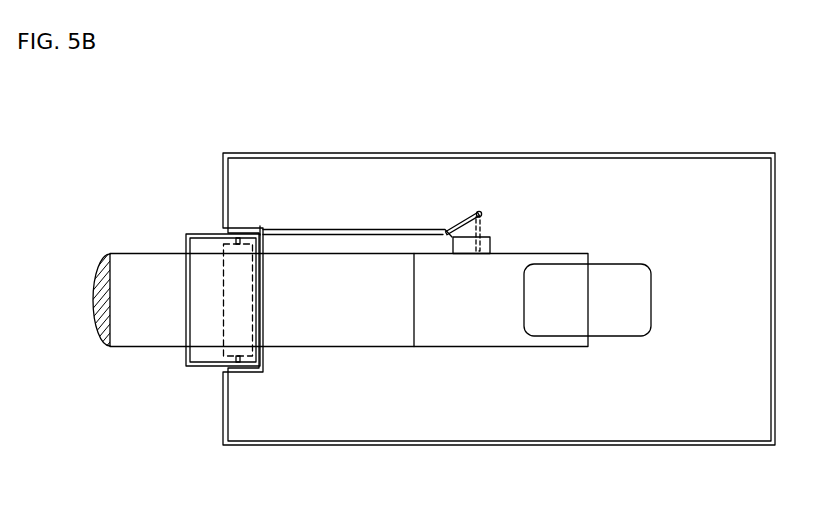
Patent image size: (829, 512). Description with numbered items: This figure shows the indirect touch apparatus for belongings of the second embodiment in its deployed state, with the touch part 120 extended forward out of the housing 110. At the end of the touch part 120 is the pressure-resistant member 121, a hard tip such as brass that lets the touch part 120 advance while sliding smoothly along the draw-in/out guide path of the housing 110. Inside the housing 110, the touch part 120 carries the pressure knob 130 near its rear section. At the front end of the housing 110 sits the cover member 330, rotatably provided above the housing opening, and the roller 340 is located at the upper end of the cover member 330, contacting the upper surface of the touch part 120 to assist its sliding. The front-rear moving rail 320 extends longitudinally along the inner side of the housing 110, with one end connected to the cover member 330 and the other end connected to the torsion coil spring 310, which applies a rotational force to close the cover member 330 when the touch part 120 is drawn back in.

The housing 110 is at (760, 152).
The touch part 120 is at (348, 330).
The pressure-resistant member 121 is at (94, 275).
The pressure knob 130 is at (644, 296).
The torsion coil spring 310 is at (456, 219).
The front-rear moving rail 320 is at (353, 229).
The cover member 330 is at (200, 233).
The roller 340 is at (242, 255).